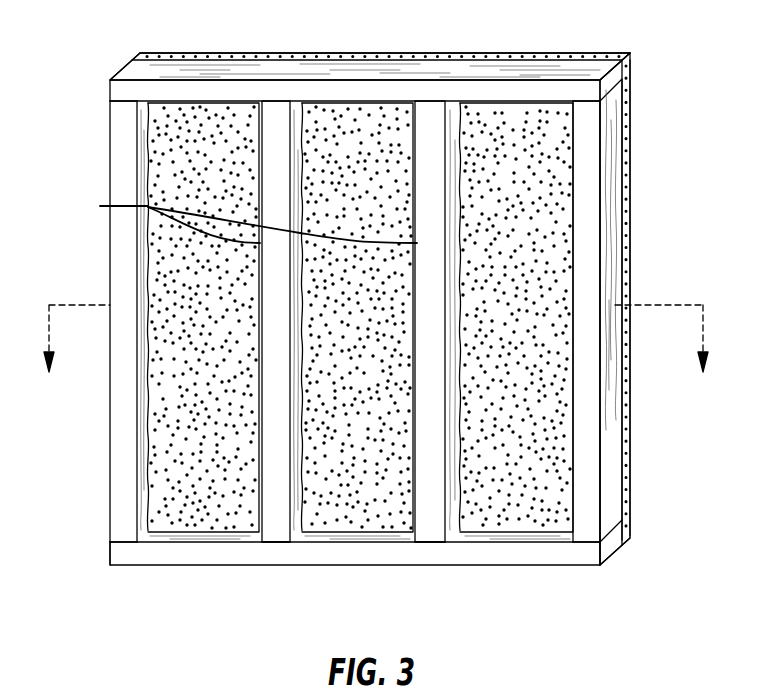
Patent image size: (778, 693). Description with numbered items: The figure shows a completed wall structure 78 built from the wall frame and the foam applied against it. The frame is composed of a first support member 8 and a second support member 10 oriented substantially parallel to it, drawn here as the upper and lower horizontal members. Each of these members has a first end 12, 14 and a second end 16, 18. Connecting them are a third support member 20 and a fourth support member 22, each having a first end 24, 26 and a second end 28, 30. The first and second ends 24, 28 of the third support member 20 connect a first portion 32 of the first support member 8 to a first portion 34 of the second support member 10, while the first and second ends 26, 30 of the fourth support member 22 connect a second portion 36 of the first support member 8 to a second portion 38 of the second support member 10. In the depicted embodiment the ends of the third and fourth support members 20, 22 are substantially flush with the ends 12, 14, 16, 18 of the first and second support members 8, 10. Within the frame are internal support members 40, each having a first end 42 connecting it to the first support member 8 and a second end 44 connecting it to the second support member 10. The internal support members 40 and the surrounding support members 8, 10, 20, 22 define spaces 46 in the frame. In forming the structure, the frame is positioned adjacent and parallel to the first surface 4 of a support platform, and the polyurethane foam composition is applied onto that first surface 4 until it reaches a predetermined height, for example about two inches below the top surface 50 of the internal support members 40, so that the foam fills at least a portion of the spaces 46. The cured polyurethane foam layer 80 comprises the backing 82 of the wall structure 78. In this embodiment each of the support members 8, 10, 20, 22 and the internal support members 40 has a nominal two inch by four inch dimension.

The first surface 4 is at (374, 355).
The first support member 8 is at (497, 79).
The second support member 10 is at (498, 565).
The first end of first support member 12 is at (125, 72).
The first end of second support member 14 is at (108, 553).
The second end of first support member 16 is at (613, 62).
The second end of second support member 18 is at (613, 554).
The third support member 20 is at (108, 432).
The fourth support member 22 is at (623, 413).
The first end of third support member 24 is at (123, 103).
The first end of fourth support member 26 is at (615, 137).
The second end of third support member 28 is at (122, 540).
The second end of fourth support member 30 is at (612, 530).
The first portion of first support member 32 is at (154, 58).
The first portion of second support member 34 is at (125, 566).
The second portion of first support member 36 is at (568, 58).
The second portion of second support member 38 is at (580, 566).
The internal support member 40 is at (260, 516).
The first end of internal support member 42 is at (280, 104).
The second end of internal support member 44 is at (280, 542).
The space 46 is at (357, 357).
The top surface of internal support member 50 is at (240, 216).
The wall structure 78 is at (668, 105).
The polyurethane foam layer 80 is at (631, 183).
The backing 82 is at (632, 245).